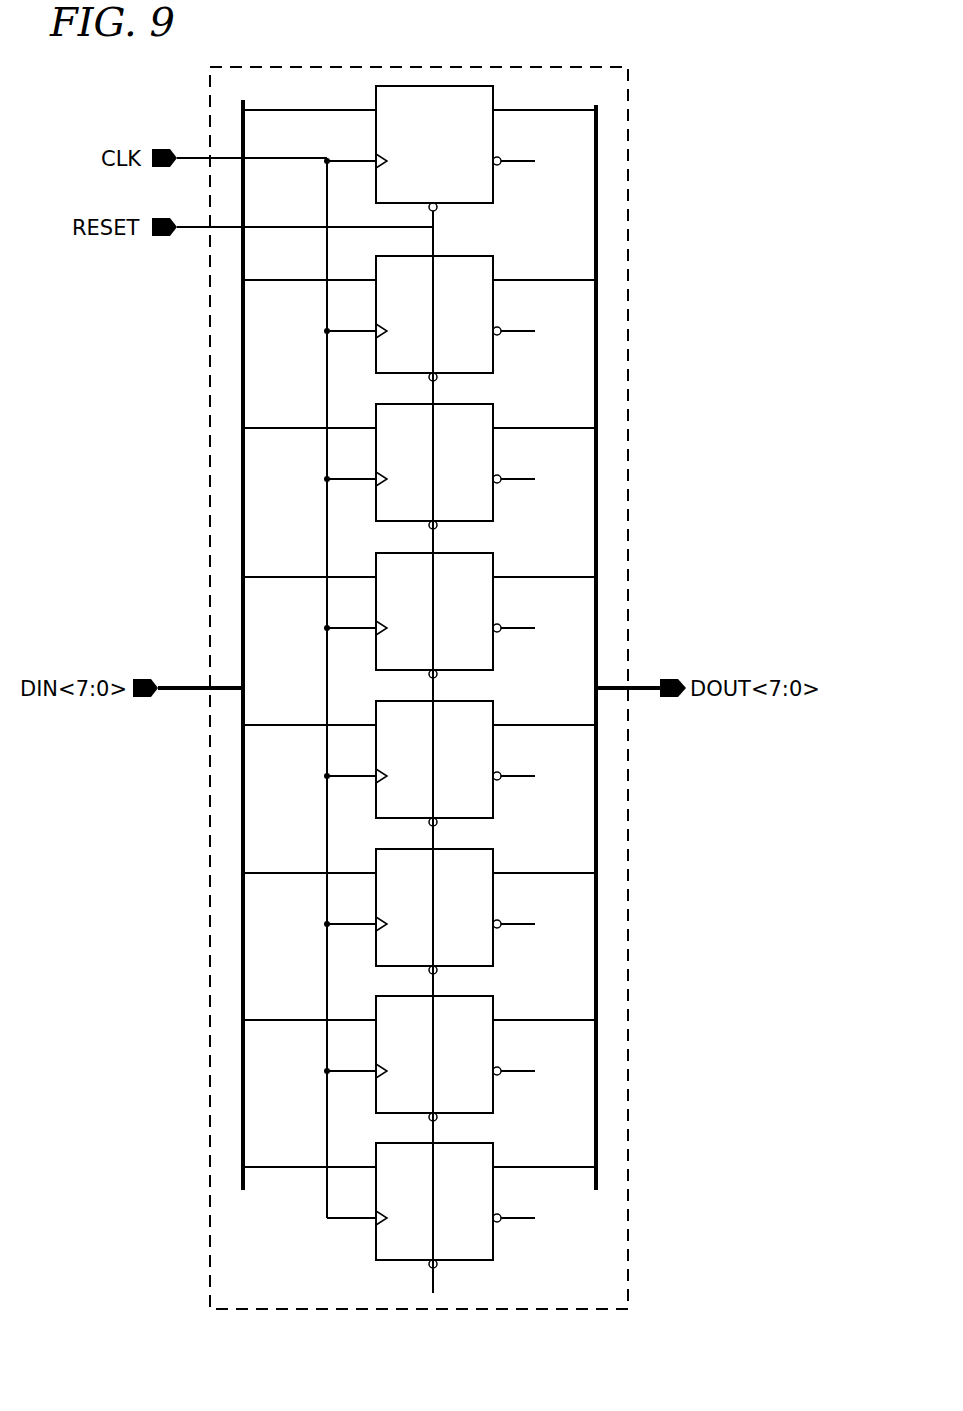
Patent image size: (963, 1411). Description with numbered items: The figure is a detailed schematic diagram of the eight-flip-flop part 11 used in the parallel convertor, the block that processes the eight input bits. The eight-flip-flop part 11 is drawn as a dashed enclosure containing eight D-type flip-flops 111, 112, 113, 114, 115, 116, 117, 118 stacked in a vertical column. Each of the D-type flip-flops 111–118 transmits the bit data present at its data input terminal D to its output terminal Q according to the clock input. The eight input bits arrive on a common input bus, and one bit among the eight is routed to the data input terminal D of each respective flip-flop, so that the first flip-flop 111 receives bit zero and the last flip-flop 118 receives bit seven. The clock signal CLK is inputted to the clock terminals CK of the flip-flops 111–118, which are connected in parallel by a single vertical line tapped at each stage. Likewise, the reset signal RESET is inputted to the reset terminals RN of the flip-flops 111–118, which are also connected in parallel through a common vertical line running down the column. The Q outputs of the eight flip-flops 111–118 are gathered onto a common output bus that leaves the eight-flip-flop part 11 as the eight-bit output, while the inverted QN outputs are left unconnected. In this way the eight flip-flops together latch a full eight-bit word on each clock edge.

The 8-flip-flop part 11 is at (628, 141).
The D-type flip-flop 111 is at (493, 143).
The D-type flip-flop 112 is at (493, 313).
The D-type flip-flop 113 is at (493, 461).
The D-type flip-flop 114 is at (493, 610).
The D-type flip-flop 115 is at (419, 761).
The D-type flip-flop 116 is at (493, 906).
The D-type flip-flop 117 is at (493, 1053).
The D-type flip-flop 118 is at (493, 1200).